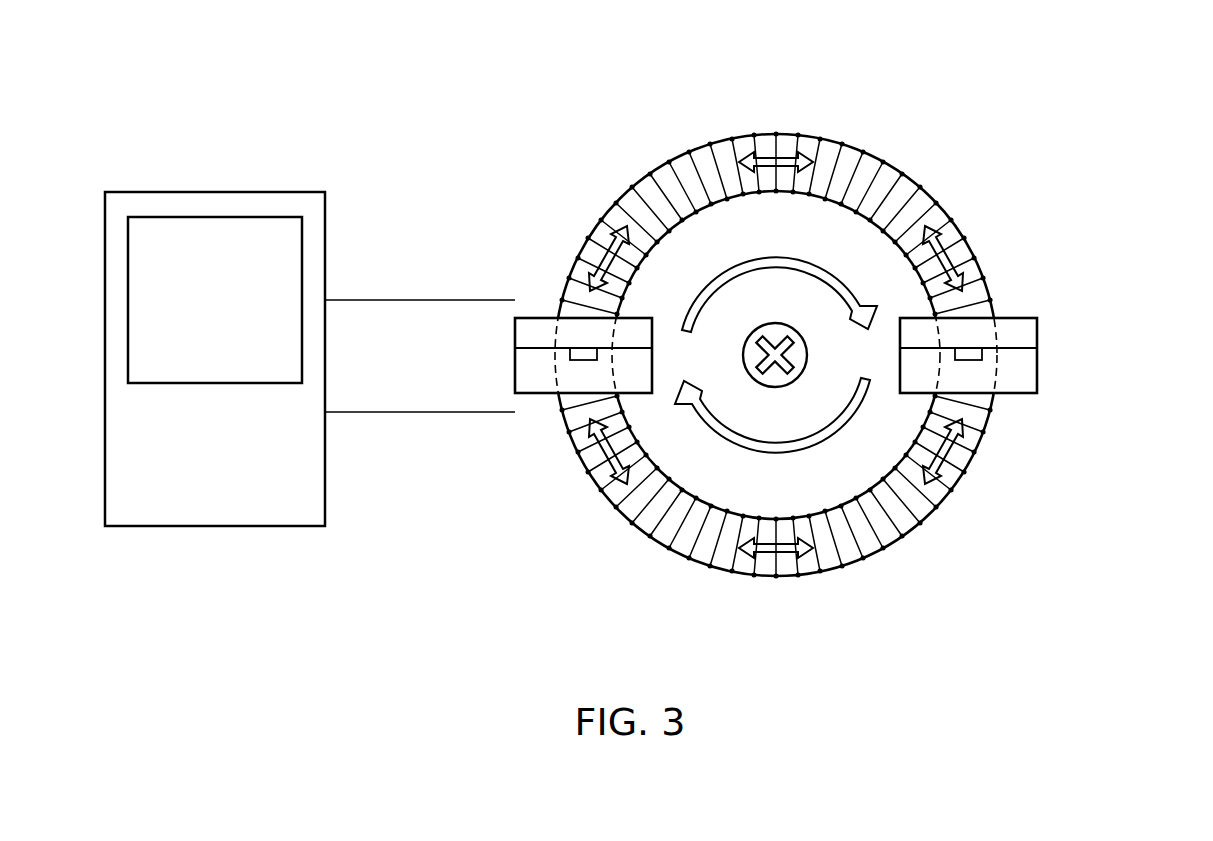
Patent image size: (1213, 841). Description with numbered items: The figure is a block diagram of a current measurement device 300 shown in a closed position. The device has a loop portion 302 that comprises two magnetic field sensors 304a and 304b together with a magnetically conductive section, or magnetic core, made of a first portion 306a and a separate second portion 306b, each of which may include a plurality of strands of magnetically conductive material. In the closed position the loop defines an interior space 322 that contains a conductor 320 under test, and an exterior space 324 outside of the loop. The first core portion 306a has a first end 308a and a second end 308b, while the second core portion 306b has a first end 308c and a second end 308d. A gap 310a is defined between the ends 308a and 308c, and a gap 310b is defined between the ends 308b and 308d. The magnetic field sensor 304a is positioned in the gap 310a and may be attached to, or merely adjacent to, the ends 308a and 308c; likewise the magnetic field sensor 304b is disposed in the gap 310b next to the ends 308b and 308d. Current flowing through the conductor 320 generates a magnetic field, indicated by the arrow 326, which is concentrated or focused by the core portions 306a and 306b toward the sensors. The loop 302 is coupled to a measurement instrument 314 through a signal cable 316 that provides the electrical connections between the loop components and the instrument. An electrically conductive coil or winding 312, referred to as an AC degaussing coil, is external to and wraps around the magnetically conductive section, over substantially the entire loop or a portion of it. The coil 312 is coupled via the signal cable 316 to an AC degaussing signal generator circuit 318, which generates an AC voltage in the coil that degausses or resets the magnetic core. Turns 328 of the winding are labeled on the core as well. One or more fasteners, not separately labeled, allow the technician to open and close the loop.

The measurement device 300 is at (1074, 110).
The loop portion 302 is at (796, 104).
The magnetic field sensor 304a is at (497, 318).
The magnetic field sensor 304b is at (1055, 393).
The first portion of magnetically conductive section 306a is at (685, 185).
The second portion of magnetically conductive section 306b is at (893, 525).
The first end 308a is at (570, 308).
The second end 308b is at (965, 305).
The first end 308c is at (563, 433).
The second end 308d is at (968, 400).
The gap 310a is at (715, 355).
The gap 310b is at (846, 355).
The coil 312 is at (855, 148).
The measurement instrument 314 is at (228, 528).
The signal cable 316 is at (427, 300).
The AC degaussing signal generator circuit 318 is at (207, 217).
The conductor 320 is at (776, 323).
The interior space 322 is at (880, 369).
The exterior space 324 is at (1052, 519).
The arrow indicating magnetic field 326 is at (810, 257).
The winding turns 328 is at (965, 250).